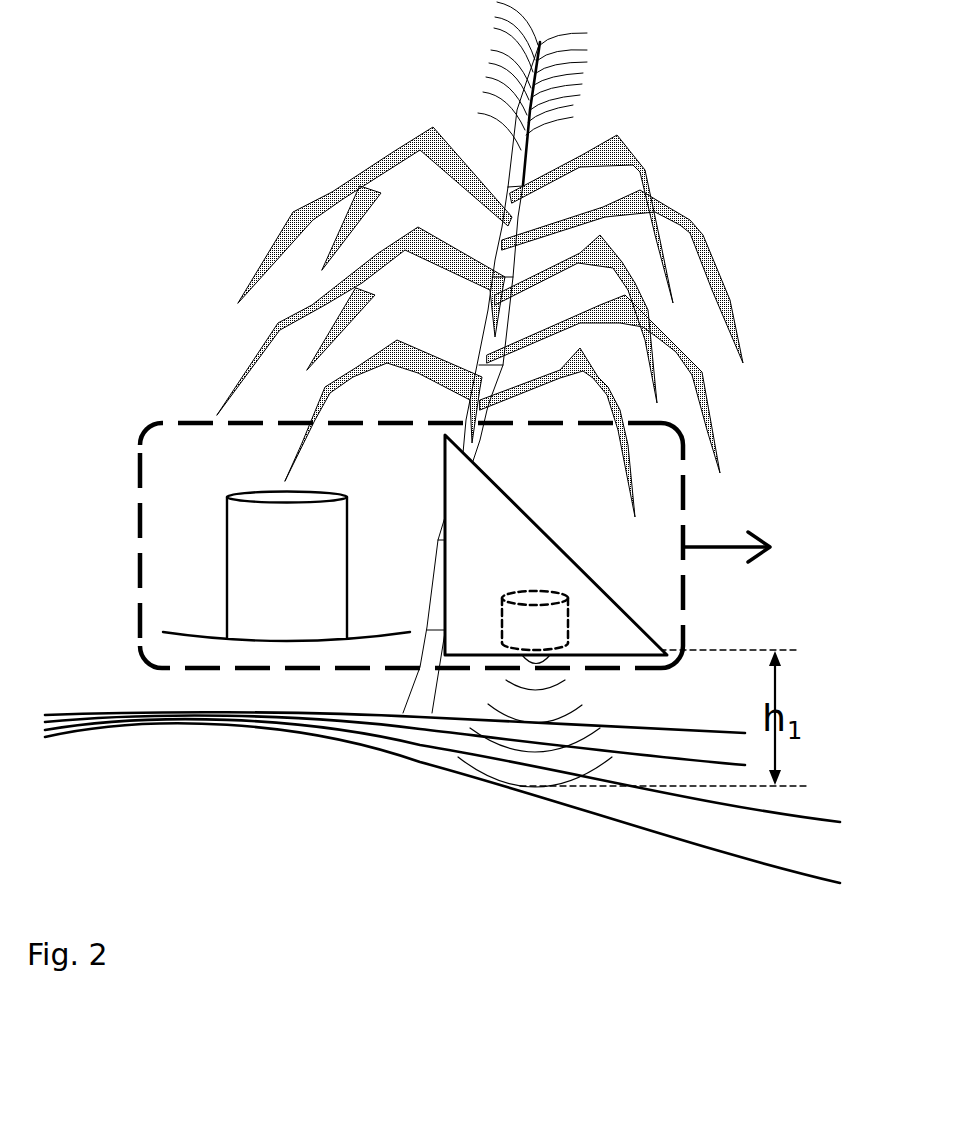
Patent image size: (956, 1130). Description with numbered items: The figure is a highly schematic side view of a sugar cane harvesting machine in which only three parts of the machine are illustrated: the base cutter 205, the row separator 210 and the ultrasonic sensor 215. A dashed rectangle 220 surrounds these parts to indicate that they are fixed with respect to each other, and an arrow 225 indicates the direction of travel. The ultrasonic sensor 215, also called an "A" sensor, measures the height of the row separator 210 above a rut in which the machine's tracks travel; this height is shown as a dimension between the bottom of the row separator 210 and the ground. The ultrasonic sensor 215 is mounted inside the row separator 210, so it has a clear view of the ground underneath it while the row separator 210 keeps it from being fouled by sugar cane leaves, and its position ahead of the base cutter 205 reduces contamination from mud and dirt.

The base cutter 205 is at (307, 578).
The row separator 210 is at (510, 558).
The ultrasonic sensor 215 is at (548, 593).
The dashed rectangle 220 is at (140, 474).
The arrow 225 is at (726, 543).